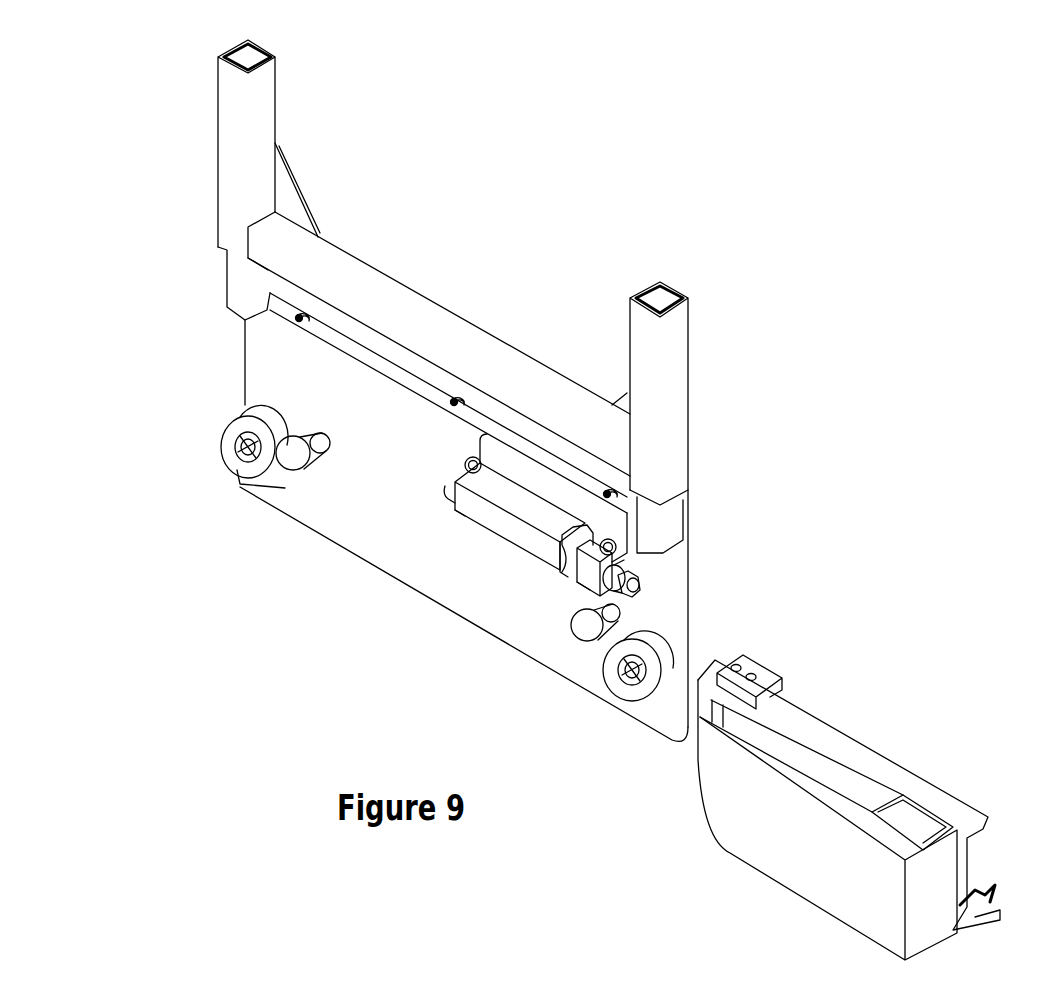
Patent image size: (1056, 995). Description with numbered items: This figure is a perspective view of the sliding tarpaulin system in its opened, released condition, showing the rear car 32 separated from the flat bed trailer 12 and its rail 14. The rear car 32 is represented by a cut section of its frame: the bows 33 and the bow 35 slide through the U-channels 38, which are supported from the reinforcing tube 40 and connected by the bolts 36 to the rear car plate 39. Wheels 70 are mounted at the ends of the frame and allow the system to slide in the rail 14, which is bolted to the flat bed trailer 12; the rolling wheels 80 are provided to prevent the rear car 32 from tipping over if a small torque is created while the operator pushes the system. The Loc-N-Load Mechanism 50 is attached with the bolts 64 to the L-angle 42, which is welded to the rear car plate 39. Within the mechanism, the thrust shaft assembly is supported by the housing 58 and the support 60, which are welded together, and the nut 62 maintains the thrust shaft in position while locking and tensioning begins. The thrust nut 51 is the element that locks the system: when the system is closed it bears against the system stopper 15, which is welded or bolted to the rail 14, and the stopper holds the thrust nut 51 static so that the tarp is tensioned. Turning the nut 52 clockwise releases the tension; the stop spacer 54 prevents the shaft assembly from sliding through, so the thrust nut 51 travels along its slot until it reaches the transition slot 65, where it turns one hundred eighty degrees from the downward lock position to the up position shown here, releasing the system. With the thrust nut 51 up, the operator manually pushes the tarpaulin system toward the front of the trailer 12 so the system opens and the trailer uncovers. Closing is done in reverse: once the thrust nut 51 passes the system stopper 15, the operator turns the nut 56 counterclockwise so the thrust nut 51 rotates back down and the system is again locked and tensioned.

The flat bed trailer 12 is at (932, 883).
The rail 14 is at (957, 807).
The system stopper 15 is at (762, 675).
The rear car 32 is at (494, 276).
The bow 33 is at (232, 131).
The bow 35 is at (390, 295).
The bolt 36 is at (300, 318).
The U-channel 38 is at (235, 296).
The rear car plate 39 is at (263, 345).
The reinforcing tube 40 is at (272, 282).
The L-angle 42 is at (500, 465).
The Loc-N-Load Mechanism 50 is at (458, 533).
The thrust nut 51 is at (593, 577).
The nut 52 is at (620, 588).
The stop spacer 54 is at (613, 567).
The nut 56 is at (637, 588).
The housing 58 is at (470, 527).
The support 60 is at (587, 587).
The nut 62 is at (450, 492).
The bolt 64 is at (473, 465).
The transition slot 65 is at (556, 582).
The wheel 70 is at (263, 477).
The rolling wheel 80 is at (293, 463).